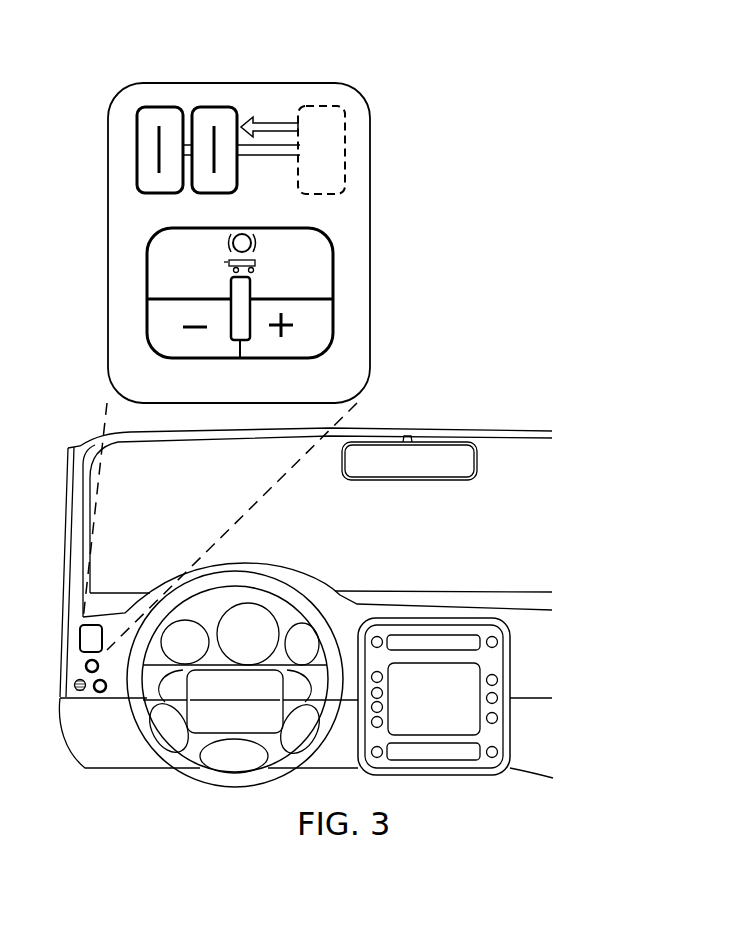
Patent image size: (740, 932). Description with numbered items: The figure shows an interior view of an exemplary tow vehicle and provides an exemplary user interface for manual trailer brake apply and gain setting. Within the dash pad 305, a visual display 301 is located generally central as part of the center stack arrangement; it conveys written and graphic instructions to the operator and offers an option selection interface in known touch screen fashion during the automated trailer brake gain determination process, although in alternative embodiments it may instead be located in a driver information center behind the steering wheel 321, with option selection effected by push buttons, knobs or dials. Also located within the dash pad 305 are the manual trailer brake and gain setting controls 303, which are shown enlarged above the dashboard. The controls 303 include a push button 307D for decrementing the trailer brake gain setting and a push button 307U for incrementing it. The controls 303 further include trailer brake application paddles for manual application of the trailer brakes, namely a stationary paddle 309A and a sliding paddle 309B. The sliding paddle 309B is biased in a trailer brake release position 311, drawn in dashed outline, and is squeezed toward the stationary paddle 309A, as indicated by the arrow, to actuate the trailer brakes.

The visual display 301 is at (448, 712).
The manual trailer brake and gain setting controls 303 is at (370, 202).
The dash pad 305 is at (101, 790).
The push button for decrementing the trailer brake gain setting 307D is at (223, 358).
The push button for incrementing the trailer brake gain setting 307U is at (268, 358).
The stationary paddle 309A is at (140, 108).
The sliding paddle 309B is at (208, 108).
The trailer brake release position 311 is at (345, 127).
The steering wheel 321 is at (227, 787).